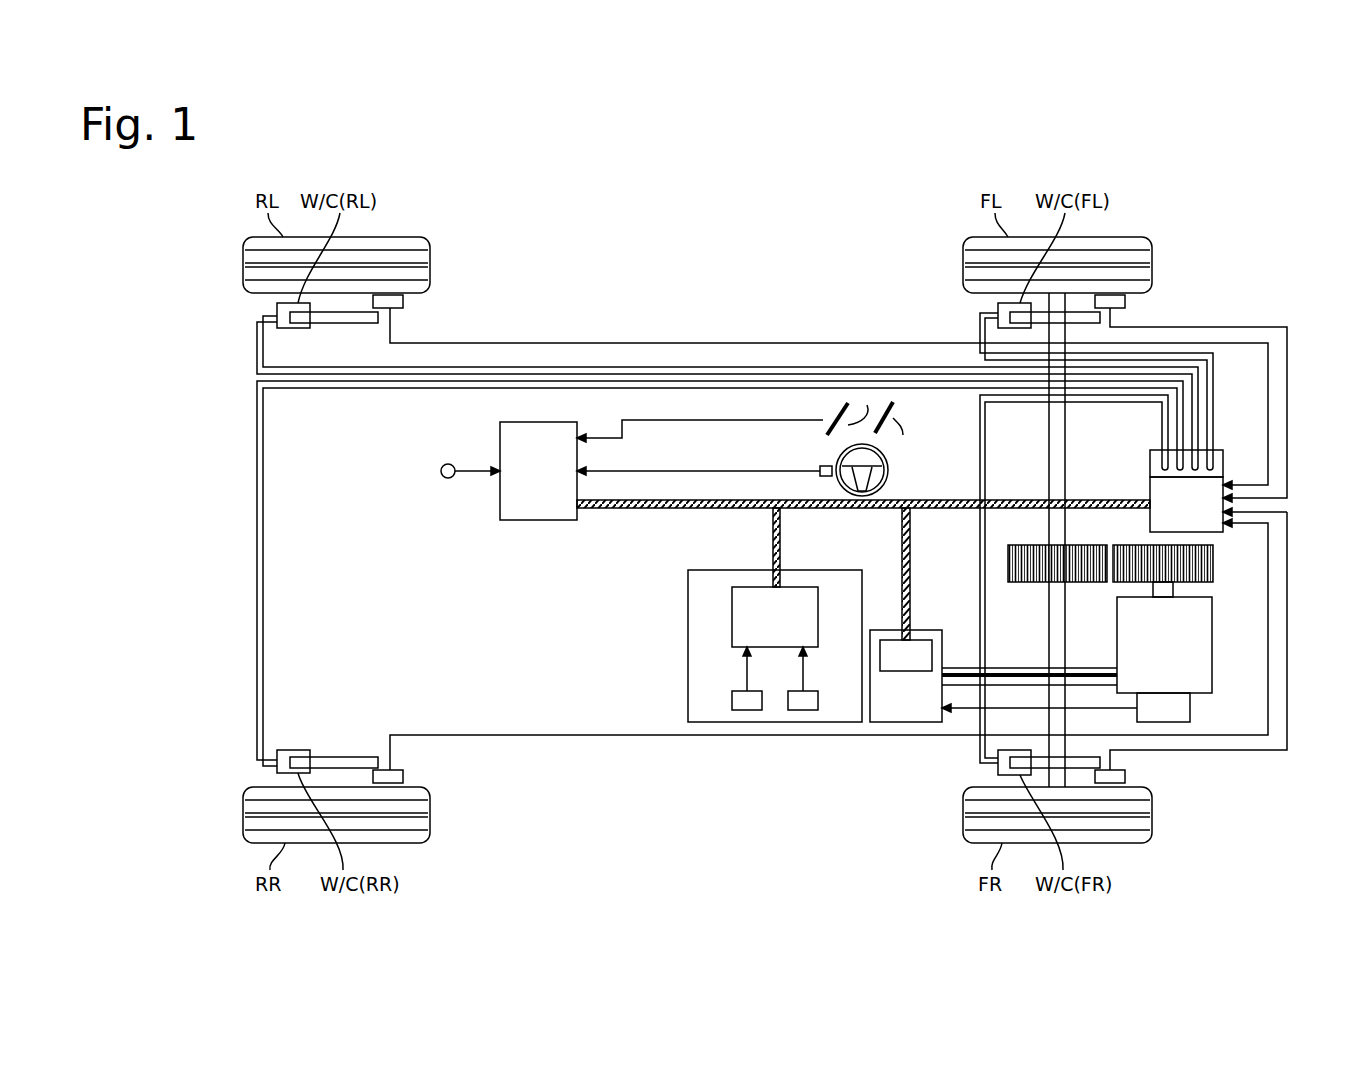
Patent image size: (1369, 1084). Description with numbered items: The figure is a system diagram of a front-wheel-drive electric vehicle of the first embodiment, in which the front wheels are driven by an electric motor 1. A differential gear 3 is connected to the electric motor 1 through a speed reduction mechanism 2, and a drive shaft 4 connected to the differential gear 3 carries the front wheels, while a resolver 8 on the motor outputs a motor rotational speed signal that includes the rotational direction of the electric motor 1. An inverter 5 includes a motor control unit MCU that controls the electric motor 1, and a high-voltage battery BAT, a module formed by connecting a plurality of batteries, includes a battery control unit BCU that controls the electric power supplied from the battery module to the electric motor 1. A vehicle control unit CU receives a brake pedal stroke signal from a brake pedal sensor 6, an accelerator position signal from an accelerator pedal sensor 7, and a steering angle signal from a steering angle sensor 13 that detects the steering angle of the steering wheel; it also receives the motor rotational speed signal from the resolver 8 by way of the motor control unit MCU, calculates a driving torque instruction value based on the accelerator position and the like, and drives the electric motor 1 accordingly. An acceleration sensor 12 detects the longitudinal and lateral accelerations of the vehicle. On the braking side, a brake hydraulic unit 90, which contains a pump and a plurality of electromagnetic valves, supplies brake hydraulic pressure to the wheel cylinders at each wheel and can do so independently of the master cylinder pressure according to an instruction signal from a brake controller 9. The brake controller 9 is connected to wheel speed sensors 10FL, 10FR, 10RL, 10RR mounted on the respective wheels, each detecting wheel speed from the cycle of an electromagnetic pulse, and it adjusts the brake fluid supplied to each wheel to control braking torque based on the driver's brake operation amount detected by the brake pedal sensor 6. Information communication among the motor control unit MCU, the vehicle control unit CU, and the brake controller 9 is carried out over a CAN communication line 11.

The electric motor 1 is at (1213, 648).
The speed reduction mechanism 2 is at (1217, 565).
The differential gear 3 is at (1082, 545).
The drive shaft 4 is at (1078, 433).
The inverter 5 is at (903, 722).
The brake pedal sensor 6 is at (838, 408).
The accelerator pedal sensor 7 is at (907, 422).
The resolver 8 is at (1192, 708).
The brake controller 9 is at (1150, 493).
The brake hydraulic unit 90 is at (1150, 462).
The CAN communication line 11 is at (618, 508).
The acceleration sensor 12 is at (441, 471).
The steering angle sensor 13 is at (825, 466).
The wheel speed sensor 10RL is at (403, 302).
The wheel speed sensor 10FL is at (1125, 302).
The wheel speed sensor 10RR is at (403, 777).
The wheel speed sensor 10FR is at (1125, 777).
The vehicle control unit CU is at (498, 442).
The high-voltage battery BAT is at (840, 562).
The battery control unit BCU is at (748, 587).
The motor control unit MCU is at (917, 640).